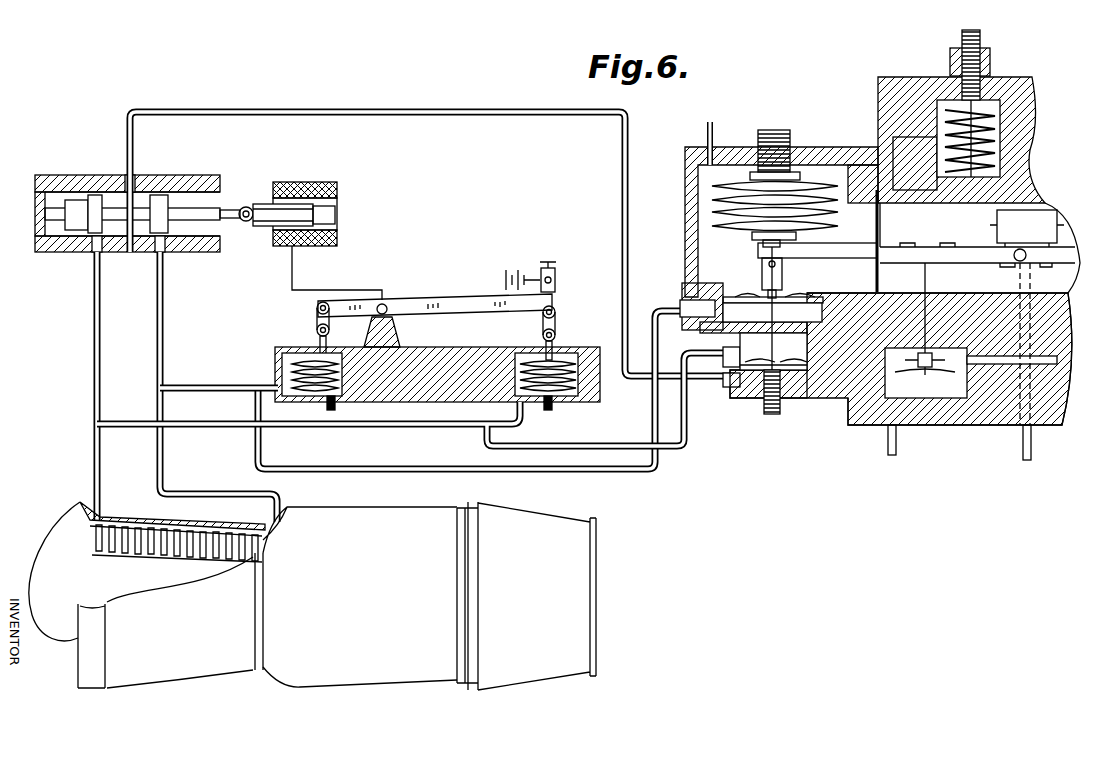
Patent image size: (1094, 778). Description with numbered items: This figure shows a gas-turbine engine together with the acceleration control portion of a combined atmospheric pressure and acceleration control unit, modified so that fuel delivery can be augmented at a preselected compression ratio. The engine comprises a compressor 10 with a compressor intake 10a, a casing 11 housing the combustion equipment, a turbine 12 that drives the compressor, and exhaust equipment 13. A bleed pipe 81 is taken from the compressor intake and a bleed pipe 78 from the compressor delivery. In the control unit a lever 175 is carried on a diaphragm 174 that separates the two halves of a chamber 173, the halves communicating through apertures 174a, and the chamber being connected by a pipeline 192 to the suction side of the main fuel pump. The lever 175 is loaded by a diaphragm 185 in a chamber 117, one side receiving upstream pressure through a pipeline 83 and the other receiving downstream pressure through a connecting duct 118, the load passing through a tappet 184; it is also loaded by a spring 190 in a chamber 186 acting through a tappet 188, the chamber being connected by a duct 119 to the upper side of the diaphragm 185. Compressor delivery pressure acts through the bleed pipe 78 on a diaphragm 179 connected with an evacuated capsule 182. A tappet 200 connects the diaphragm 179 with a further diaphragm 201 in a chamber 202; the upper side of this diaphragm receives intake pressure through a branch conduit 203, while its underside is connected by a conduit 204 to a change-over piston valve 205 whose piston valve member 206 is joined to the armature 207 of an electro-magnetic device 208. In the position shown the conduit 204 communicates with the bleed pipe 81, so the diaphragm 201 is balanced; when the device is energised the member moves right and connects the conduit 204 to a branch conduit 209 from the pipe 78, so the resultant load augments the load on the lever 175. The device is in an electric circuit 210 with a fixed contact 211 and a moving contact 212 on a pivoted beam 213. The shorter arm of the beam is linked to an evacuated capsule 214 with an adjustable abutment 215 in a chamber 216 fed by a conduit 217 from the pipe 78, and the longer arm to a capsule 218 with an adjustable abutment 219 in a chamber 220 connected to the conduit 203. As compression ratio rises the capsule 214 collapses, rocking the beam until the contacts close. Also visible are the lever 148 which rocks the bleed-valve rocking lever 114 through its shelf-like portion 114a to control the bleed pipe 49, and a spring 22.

The change-over piston valve 205 is at (192, 184).
The piston valve member 206 is at (73, 236).
The armature 207 is at (268, 205).
The electro-magnetic device 208 is at (337, 214).
The branch conduit 209 is at (163, 290).
The conduit 204 is at (425, 118).
The electric circuit 210 is at (365, 284).
The pivoted beam 213 is at (457, 300).
The fixed contact 211 is at (556, 281).
The moving contact 212 is at (556, 309).
The evacuated capsule 214 is at (303, 348).
The chamber 216 is at (282, 372).
The capsule 218 is at (562, 372).
The adjustable abutment 215 is at (336, 402).
The adjustable abutment 219 is at (548, 410).
The chamber 220 is at (588, 384).
The conduit 217 is at (222, 386).
The branch conduit 203 is at (424, 428).
The bleed pipe 81 is at (93, 462).
The bleed pipe 78 is at (175, 465).
The compressor 10 is at (200, 530).
The compressor intake 10a is at (92, 535).
The casing 11 is at (366, 512).
The turbine 12 is at (462, 510).
The exhaust equipment 13 is at (566, 525).
The pipeline 192 is at (712, 121).
The evacuated capsule 182 is at (815, 188).
The duct 119 is at (886, 112).
The chamber 173 is at (853, 182).
The spring 190 is at (905, 137).
The chamber 186 is at (986, 98).
The tappet 188 is at (996, 165).
The shelf-like portion 114a is at (1022, 212).
The lever 175 is at (828, 256).
The apertures 174a is at (898, 216).
The diaphragm 174 is at (874, 268).
The diaphragm 179 is at (748, 297).
The tappet 200 is at (698, 306).
The tappet 184 is at (922, 284).
The lever 148 is at (1026, 261).
The rocking lever 114 is at (1057, 360).
The diaphragm 201 is at (757, 380).
The spring 22 is at (805, 403).
The chamber 202 is at (805, 372).
The pipeline 83 is at (891, 456).
The chamber 117 is at (913, 392).
The diaphragm 185 is at (963, 400).
The connecting duct 118 is at (1034, 365).
The bleed pipe 49 is at (1028, 462).